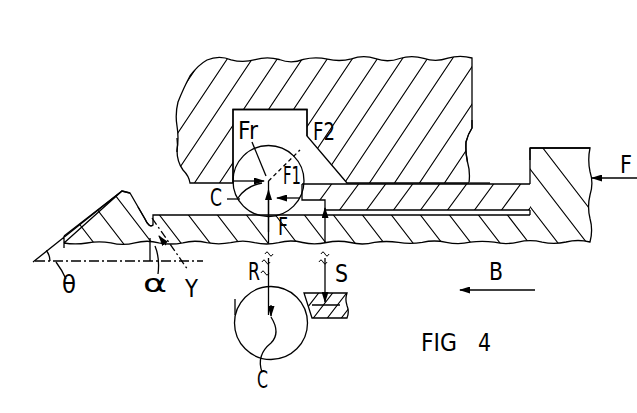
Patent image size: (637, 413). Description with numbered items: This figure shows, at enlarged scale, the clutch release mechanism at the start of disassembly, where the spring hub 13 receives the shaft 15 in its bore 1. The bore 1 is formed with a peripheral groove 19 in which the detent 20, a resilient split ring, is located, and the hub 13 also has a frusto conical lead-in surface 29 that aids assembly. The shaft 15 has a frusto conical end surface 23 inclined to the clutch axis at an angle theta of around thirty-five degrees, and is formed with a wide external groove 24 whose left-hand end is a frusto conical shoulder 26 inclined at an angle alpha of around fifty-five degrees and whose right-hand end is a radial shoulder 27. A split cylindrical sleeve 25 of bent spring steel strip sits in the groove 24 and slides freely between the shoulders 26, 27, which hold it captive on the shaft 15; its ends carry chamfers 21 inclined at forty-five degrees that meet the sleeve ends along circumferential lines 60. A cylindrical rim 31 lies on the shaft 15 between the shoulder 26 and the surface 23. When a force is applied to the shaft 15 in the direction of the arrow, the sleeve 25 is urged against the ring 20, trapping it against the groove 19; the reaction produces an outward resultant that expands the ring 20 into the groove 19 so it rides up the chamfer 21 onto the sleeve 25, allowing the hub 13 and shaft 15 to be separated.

The bore 1 is at (177, 147).
The spring hub 13 is at (429, 72).
The shaft 15 is at (557, 146).
The peripheral groove 19 is at (247, 112).
The detent 20 is at (274, 168).
The chamfers 21 is at (522, 182).
The frusto conical end surface 23 is at (94, 211).
The external groove 24 is at (350, 242).
The split cylindrical sleeve 25 is at (478, 176).
The frusto conical shoulder 26 is at (143, 216).
The radial shoulder 27 is at (529, 148).
The frusto conical lead-in surface 29 is at (472, 134).
The cylindrical rim 31 is at (125, 190).
The circumferential lines 60 is at (305, 301).